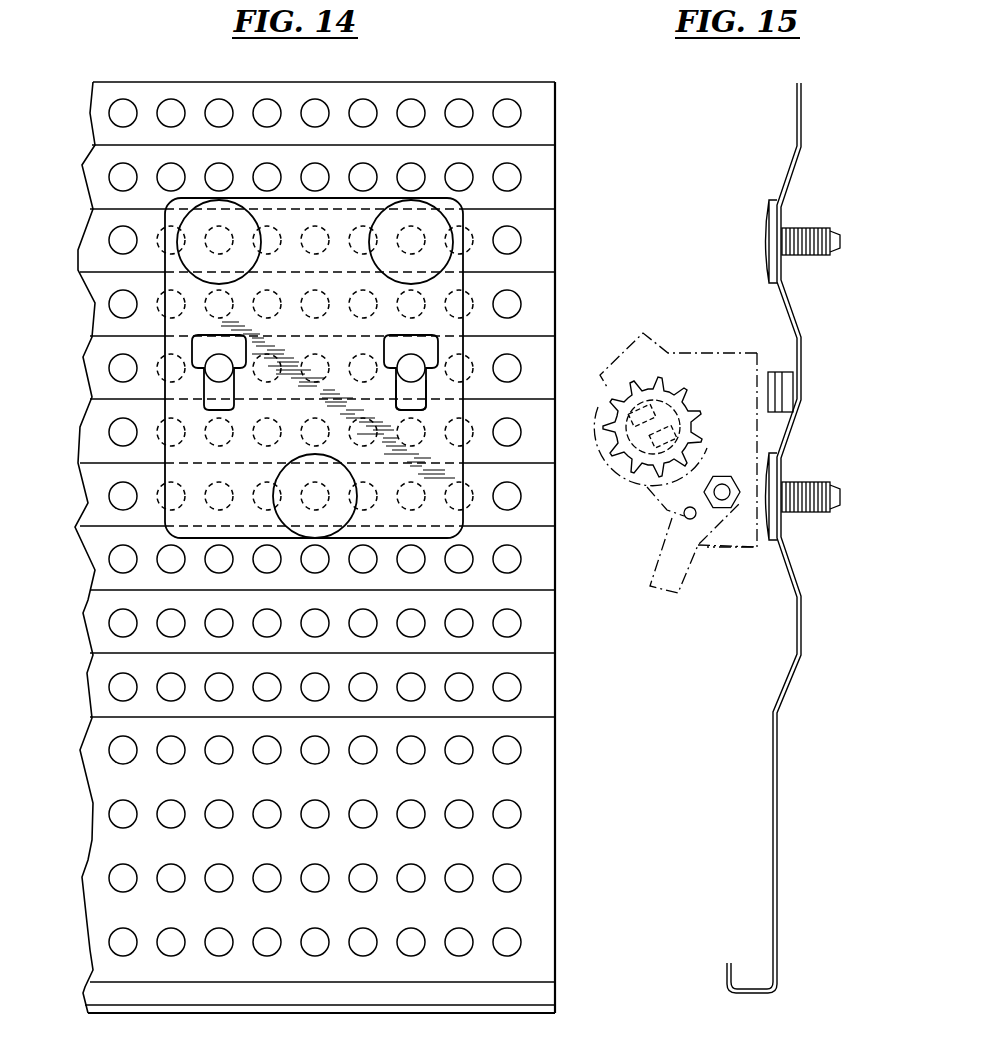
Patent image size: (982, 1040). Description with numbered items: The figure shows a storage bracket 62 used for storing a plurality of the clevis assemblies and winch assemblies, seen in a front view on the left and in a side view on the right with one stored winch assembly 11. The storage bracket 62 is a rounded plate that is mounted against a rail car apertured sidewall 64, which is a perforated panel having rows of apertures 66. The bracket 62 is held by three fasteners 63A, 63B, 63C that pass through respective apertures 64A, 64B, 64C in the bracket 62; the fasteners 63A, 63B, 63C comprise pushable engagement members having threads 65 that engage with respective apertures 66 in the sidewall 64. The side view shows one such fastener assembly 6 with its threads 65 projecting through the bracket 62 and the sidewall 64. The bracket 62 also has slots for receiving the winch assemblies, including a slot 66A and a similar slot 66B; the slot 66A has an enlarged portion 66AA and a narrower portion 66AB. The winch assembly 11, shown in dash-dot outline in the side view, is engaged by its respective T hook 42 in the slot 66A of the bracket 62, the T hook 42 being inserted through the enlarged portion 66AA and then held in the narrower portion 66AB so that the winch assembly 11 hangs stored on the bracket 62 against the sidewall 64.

In FIG. 14, the rail car apertured sidewall 64 is at (530, 782).
In FIG. 15, the rail car apertured sidewall 64 is at (780, 793).
In FIG. 14, the apertures 66 is at (503, 688).
In FIG. 14, the storage bracket 62 is at (465, 281).
In FIG. 14, the fastener 63A is at (433, 222).
In FIG. 14, the fastener 63B is at (198, 217).
In FIG. 14, the fastener 63C is at (287, 480).
In FIG. 15, the fastener 63C is at (787, 500).
In FIG. 14, the aperture 64A is at (411, 242).
In FIG. 14, the aperture 64B is at (210, 249).
In FIG. 14, the aperture 64C is at (310, 502).
In FIG. 14, the slot 66A is at (422, 348).
In FIG. 14, the second clip 66B is at (190, 338).
In FIG. 14, the enlarged portion 66AA is at (400, 336).
In FIG. 14, the narrower portion 66AB is at (417, 393).
In FIG. 15, the fastener assembly 6 is at (784, 224).
In FIG. 15, the threads 65 is at (798, 242).
In FIG. 15, the T hook 42 is at (793, 388).
In FIG. 15, the winch assembly 11 is at (661, 373).